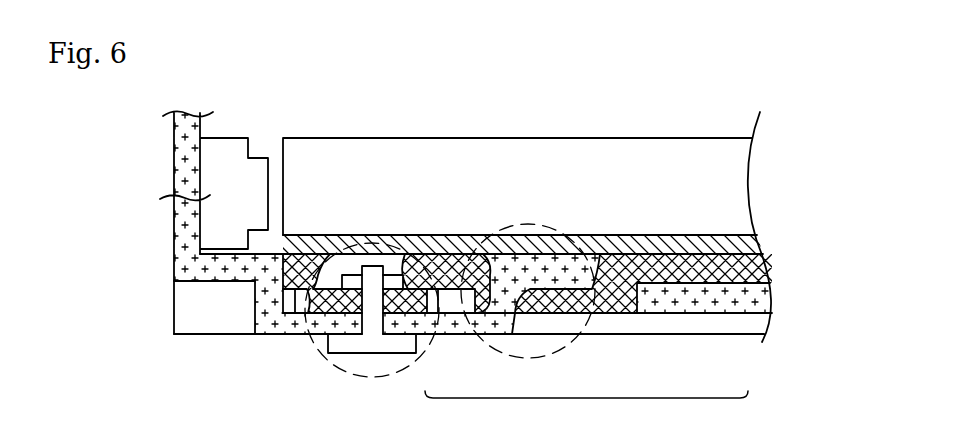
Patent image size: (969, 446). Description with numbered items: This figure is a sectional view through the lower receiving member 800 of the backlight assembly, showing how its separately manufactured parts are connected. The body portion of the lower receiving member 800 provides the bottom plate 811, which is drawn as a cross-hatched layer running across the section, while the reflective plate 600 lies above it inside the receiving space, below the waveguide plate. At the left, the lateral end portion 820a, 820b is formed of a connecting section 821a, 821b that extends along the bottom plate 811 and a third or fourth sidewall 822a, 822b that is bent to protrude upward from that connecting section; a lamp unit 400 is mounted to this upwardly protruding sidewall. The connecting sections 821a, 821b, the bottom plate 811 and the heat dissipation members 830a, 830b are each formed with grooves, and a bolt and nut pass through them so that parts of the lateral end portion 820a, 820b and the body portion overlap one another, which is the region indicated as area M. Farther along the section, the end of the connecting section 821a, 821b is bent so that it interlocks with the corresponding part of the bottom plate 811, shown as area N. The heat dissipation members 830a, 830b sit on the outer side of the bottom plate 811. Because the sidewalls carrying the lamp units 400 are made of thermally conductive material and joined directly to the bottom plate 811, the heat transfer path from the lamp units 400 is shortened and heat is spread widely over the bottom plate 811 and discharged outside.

The lamp unit 400 is at (210, 193).
The third sidewall 822a is at (205, 223).
The fourth sidewall 822b is at (190, 267).
The connecting section 821a is at (301, 336).
The connecting section 821b is at (288, 334).
The lateral end portion 820a is at (491, 319).
The lateral end portion 820b is at (470, 322).
The heat dissipation member 830a is at (703, 335).
The heat dissipation member 830b is at (697, 300).
The reflective plate 600 is at (765, 245).
The bottom plate 811 is at (770, 270).
The lower receiving member 800 is at (732, 187).
The area M is at (372, 378).
The area N is at (530, 228).